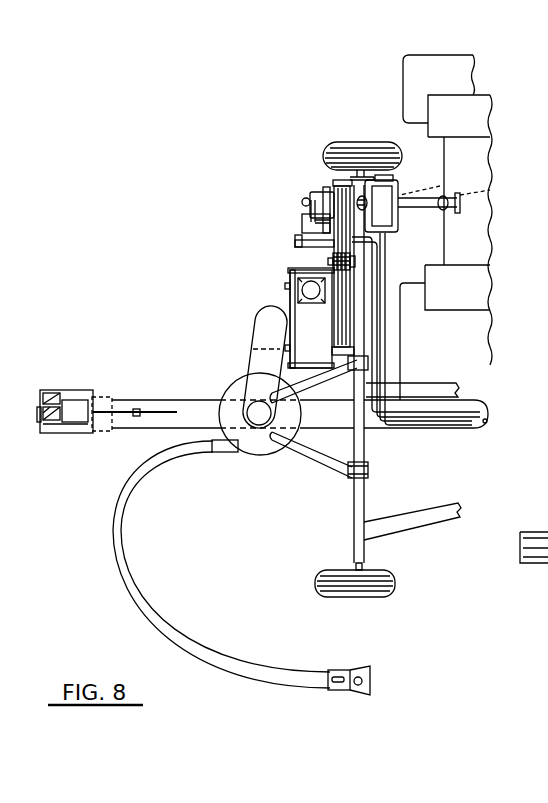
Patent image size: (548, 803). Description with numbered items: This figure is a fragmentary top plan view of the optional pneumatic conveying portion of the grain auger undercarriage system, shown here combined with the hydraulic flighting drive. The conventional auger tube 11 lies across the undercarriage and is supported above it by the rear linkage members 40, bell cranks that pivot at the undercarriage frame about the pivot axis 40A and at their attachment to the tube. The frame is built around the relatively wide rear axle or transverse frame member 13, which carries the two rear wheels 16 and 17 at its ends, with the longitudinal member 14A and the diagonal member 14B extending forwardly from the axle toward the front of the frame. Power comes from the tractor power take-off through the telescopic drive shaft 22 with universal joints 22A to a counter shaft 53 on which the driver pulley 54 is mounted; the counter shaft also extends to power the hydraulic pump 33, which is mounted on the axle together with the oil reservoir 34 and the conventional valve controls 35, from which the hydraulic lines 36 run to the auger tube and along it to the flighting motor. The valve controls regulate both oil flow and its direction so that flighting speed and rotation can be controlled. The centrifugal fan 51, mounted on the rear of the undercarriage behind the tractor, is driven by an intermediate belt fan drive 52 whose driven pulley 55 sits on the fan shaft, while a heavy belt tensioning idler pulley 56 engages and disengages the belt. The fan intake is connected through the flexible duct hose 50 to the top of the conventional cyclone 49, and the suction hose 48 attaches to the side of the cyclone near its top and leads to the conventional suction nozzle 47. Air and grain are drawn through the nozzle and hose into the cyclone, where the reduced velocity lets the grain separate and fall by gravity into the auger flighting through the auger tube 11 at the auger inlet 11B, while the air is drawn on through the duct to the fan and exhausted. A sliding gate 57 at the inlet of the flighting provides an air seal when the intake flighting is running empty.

The auger tube 11 is at (473, 427).
The auger inlet 11B is at (70, 433).
The transverse frame member 13 is at (356, 510).
The longitudinal member 14A is at (452, 383).
The diagonal member 14B is at (390, 527).
The rear wheel 16 is at (396, 126).
The rear wheel 17 is at (323, 570).
The telescopic drive shaft 22 is at (440, 186).
The universal joints 22A is at (492, 184).
The hydraulic pump 33 is at (302, 202).
The oil reservoir 34 is at (306, 220).
The valve controls 35 is at (295, 242).
The hydraulic lines 36 is at (404, 332).
The rear linkage members 40 is at (320, 384).
The pivot axis 40A is at (367, 472).
The suction nozzle 47 is at (372, 659).
The suction hose 48 is at (178, 626).
The cyclone 49 is at (233, 393).
The duct hose 50 is at (257, 348).
The centrifugal fan 51 is at (290, 288).
The fan drive 52 is at (390, 215).
The counter shaft 53 is at (332, 195).
The driver pulley 54 is at (337, 183).
The driven pulley 55 is at (331, 330).
The belt tensioning idler pulley 56 is at (330, 263).
The sliding gate 57 is at (108, 395).